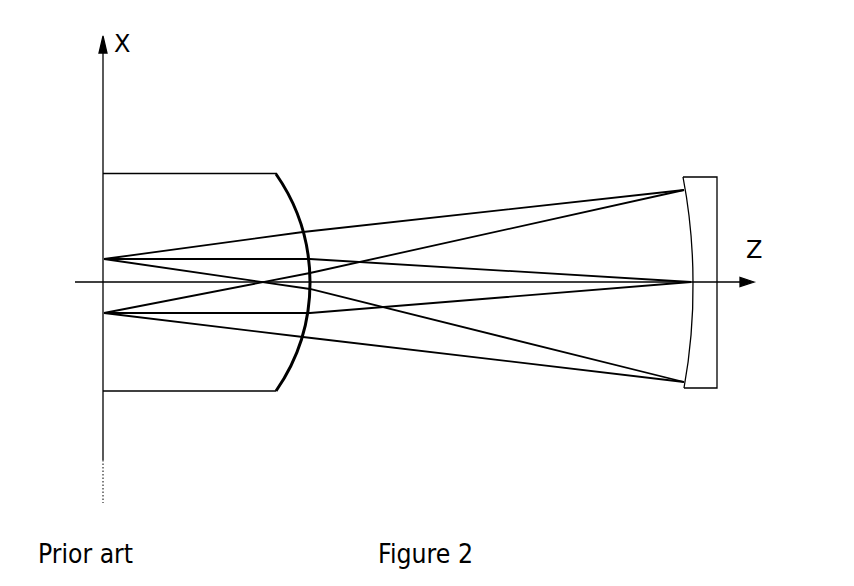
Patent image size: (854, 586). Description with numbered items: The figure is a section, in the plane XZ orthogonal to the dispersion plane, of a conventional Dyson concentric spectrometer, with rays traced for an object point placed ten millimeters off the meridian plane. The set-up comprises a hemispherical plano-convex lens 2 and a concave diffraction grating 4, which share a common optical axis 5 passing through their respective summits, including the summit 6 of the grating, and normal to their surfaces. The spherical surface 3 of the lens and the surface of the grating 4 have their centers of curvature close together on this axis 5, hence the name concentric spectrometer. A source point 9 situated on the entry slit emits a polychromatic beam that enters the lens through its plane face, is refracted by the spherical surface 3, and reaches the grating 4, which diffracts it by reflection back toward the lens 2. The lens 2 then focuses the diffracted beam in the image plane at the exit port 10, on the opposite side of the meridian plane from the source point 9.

The plano-convex lens 2 is at (194, 190).
The spherical surface of the lens 3 is at (293, 192).
The concave diffraction grating 4 is at (687, 212).
The optical axis 5 is at (723, 285).
The summit of the grating 6 is at (690, 288).
The source point 9 is at (103, 256).
The exit port 10 is at (101, 315).